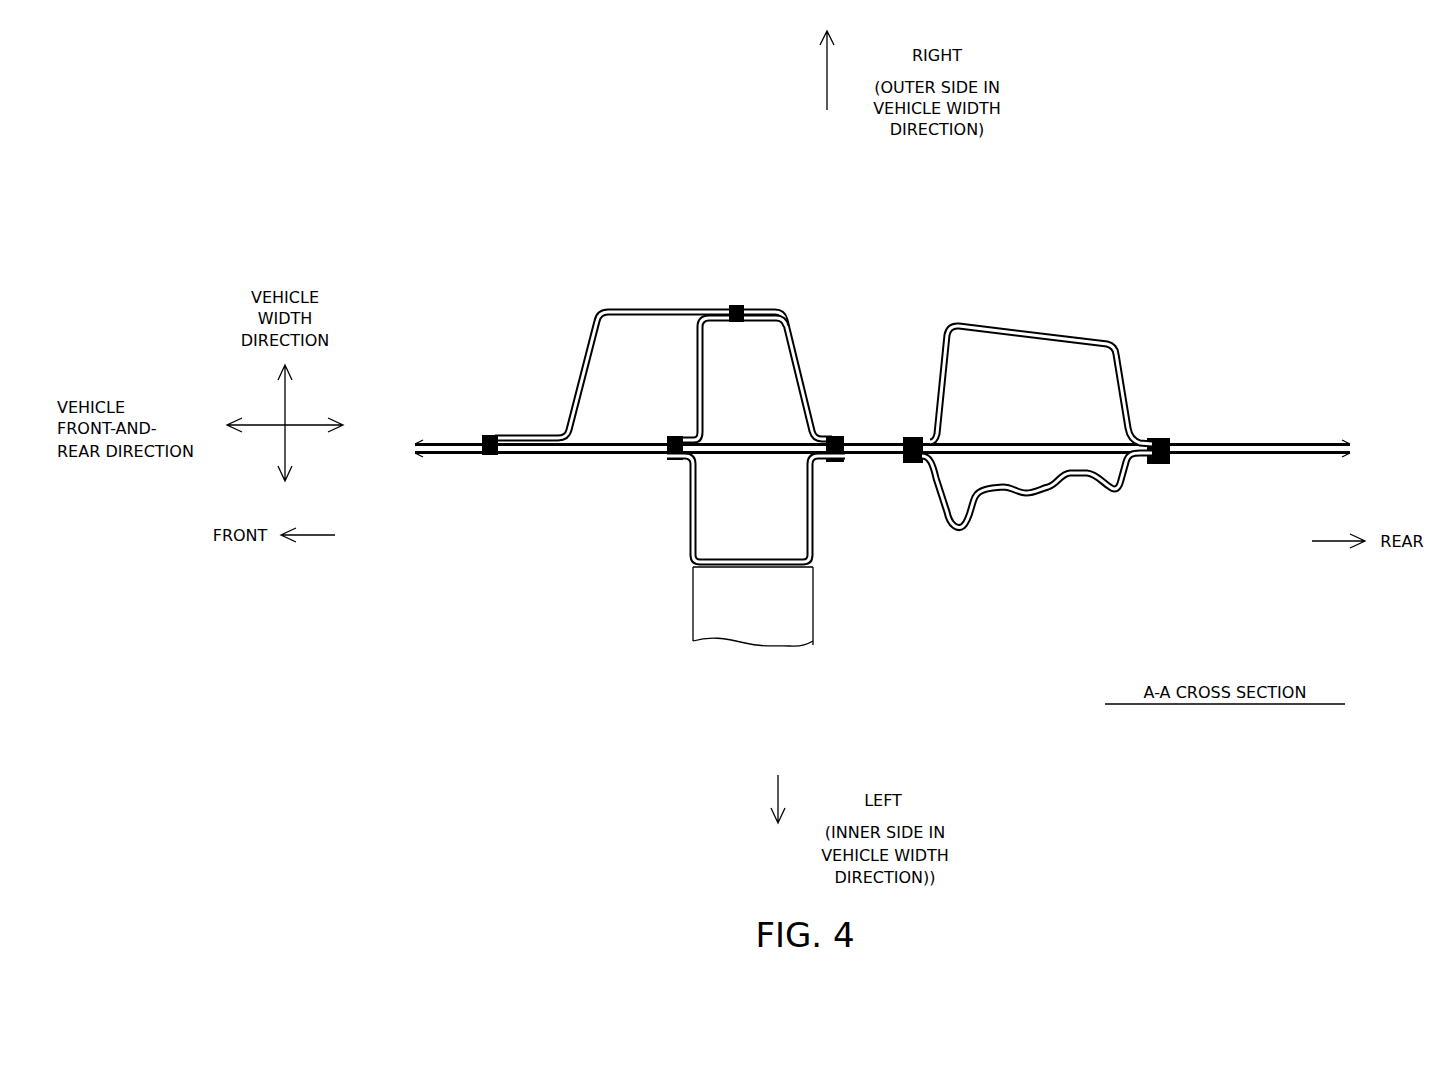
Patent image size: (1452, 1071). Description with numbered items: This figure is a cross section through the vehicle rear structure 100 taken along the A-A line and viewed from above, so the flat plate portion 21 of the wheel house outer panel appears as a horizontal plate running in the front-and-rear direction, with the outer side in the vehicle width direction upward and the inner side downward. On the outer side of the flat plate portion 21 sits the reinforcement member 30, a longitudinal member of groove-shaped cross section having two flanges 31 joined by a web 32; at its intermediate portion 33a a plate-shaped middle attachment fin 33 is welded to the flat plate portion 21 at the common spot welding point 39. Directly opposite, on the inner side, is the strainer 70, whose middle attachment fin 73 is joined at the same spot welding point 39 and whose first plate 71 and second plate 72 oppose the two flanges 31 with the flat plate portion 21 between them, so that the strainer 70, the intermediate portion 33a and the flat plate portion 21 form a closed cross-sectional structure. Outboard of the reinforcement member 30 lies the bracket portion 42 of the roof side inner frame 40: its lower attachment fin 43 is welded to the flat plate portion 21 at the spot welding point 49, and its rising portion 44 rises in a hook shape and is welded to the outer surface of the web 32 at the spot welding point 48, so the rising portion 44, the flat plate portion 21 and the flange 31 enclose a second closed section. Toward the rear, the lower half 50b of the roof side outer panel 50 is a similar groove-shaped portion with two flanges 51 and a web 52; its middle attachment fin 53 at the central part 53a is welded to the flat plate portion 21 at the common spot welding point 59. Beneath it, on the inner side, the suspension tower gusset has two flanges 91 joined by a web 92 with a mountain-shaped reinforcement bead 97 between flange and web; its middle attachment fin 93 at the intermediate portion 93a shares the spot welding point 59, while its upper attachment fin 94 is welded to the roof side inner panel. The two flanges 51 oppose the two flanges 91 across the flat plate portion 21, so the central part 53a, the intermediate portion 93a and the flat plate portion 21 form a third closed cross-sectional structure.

The vehicle rear structure 100 is at (398, 160).
The flat plate portion 21 is at (1318, 446).
The reinforcement member 30 is at (797, 322).
The flange 31 is at (803, 362).
The web 32 is at (757, 316).
The middle attachment fin 33 is at (815, 428).
The intermediate portion 33a is at (810, 402).
The spot welding point 39 is at (838, 439).
The roof side inner frame 40 is at (583, 344).
The bracket portion 42 is at (606, 306).
The lower attachment fin 43 is at (518, 437).
The rising portion 44 is at (568, 383).
The spot welding point 48 is at (737, 303).
The spot welding point 49 is at (490, 455).
The roof side outer panel 50 is at (1125, 352).
The lower half 50b is at (1102, 335).
The flange 51 is at (944, 362).
The web 52 is at (1033, 336).
The middle attachment fin 53 is at (1147, 440).
The central part 53a is at (1132, 408).
The spot welding point 59 is at (918, 434).
The strainer 70 is at (833, 567).
The first plate 71 is at (688, 520).
The second plate 72 is at (813, 529).
The middle attachment fin 73 is at (667, 462).
The flange 91 is at (940, 491).
The web 92 is at (1033, 500).
The middle attachment fin 93 is at (1166, 462).
The intermediate portion 93a is at (923, 460).
The upper attachment fin 94 is at (1059, 500).
The reinforcement bead 97 is at (1122, 491).